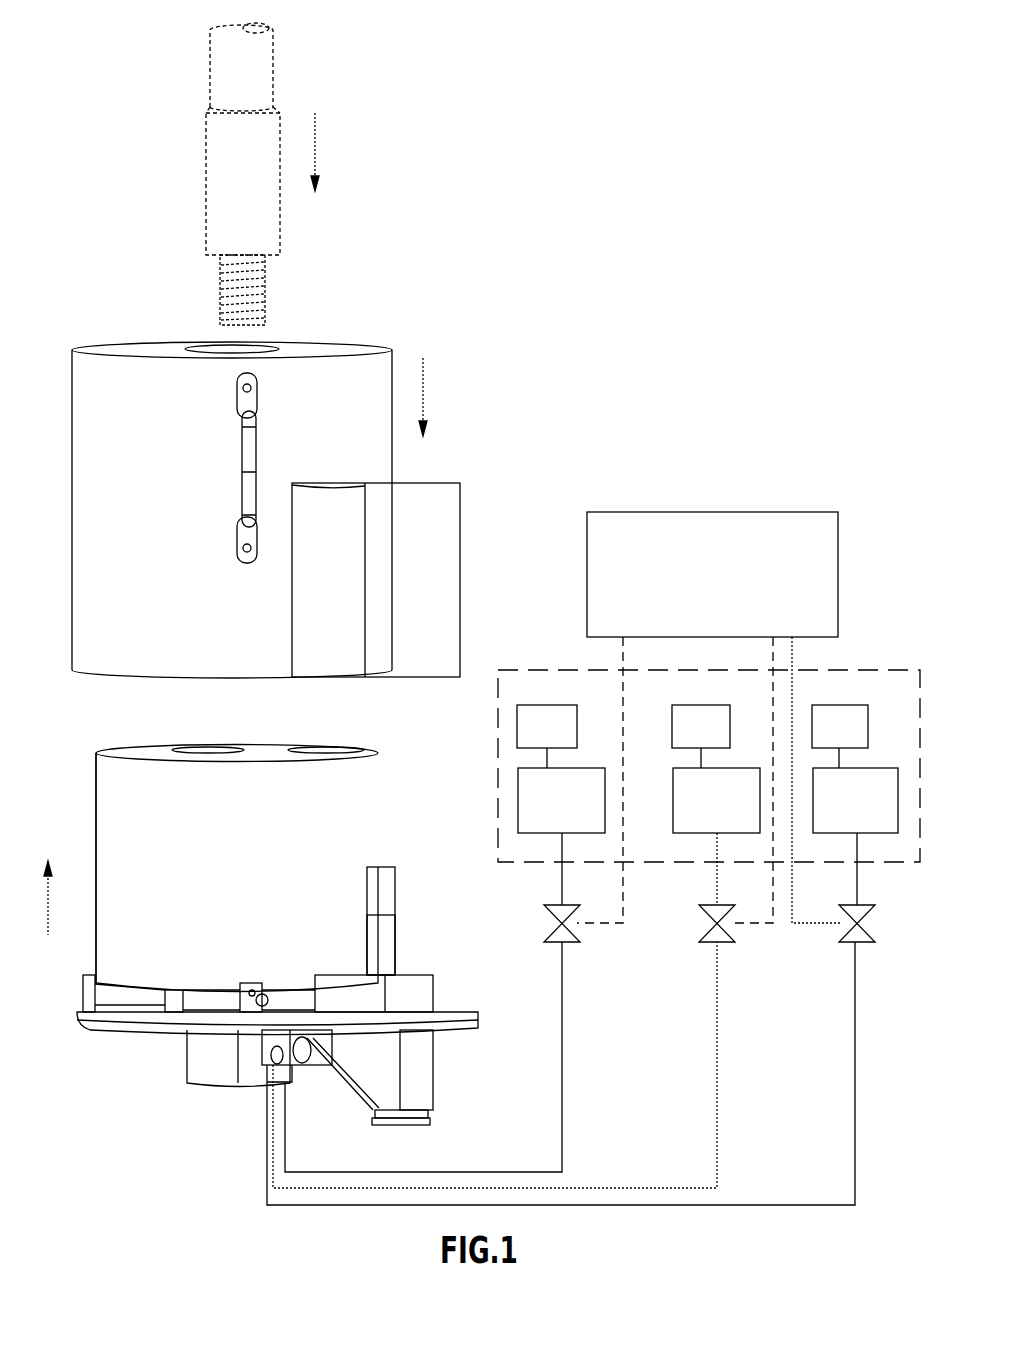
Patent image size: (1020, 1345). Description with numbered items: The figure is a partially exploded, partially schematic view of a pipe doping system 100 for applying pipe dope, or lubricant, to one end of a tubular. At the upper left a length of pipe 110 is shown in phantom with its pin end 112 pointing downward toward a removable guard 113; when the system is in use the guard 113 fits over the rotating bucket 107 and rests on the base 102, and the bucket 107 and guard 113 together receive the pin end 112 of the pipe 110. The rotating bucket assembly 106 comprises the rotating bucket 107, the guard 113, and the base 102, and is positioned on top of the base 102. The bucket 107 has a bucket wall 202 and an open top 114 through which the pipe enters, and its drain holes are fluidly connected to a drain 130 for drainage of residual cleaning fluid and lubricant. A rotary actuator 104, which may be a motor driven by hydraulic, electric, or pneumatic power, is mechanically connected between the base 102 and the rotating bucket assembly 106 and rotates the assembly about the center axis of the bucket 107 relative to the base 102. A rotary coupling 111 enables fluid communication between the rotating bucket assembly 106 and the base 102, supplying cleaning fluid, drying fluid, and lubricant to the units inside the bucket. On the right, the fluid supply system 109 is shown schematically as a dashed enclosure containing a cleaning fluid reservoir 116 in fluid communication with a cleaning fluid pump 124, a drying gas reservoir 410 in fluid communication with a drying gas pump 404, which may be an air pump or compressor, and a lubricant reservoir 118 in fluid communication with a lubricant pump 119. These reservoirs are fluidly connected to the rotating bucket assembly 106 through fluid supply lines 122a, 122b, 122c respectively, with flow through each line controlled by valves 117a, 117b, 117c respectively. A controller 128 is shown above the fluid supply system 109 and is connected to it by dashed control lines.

The pipe doping system 100 is at (536, 346).
The length of pipe 110 is at (212, 73).
The pin end 112 is at (220, 312).
The removable guard 113 is at (88, 465).
The rotating bucket assembly 106 is at (100, 742).
The rotating bucket 107 is at (95, 840).
The open top 114 is at (275, 752).
The bucket wall 202 is at (358, 818).
The rotary actuator 104 is at (377, 942).
The base 102 is at (130, 1027).
The rotary coupling 111 is at (250, 1077).
The drain 130 is at (308, 1063).
The controller 128 is at (730, 587).
The fluid supply system 109 is at (578, 668).
The cleaning fluid pump 124 is at (562, 742).
The cleaning fluid reservoir 116 is at (580, 817).
The drying gas pump 404 is at (718, 742).
The drying gas reservoir 410 is at (735, 817).
The lubricant pump 119 is at (858, 742).
The lubricant reservoir 118 is at (872, 817).
The valve 117a is at (553, 944).
The valve 117b is at (708, 944).
The valve 117c is at (867, 944).
The fluid supply line 122a is at (565, 1073).
The fluid supply line 122b is at (718, 1072).
The fluid supply line 122c is at (857, 1080).